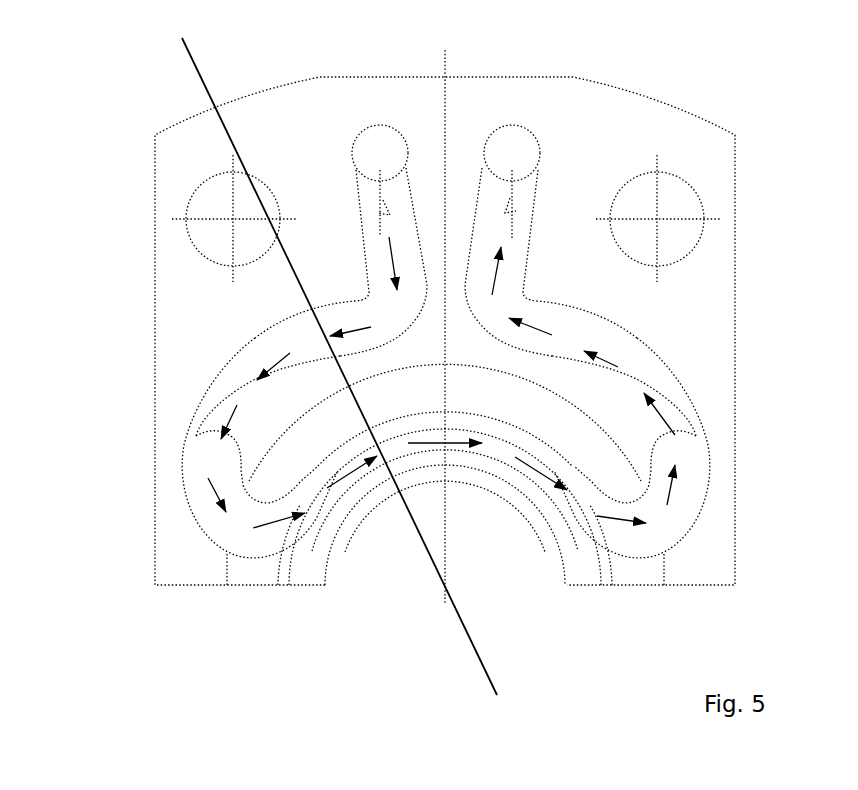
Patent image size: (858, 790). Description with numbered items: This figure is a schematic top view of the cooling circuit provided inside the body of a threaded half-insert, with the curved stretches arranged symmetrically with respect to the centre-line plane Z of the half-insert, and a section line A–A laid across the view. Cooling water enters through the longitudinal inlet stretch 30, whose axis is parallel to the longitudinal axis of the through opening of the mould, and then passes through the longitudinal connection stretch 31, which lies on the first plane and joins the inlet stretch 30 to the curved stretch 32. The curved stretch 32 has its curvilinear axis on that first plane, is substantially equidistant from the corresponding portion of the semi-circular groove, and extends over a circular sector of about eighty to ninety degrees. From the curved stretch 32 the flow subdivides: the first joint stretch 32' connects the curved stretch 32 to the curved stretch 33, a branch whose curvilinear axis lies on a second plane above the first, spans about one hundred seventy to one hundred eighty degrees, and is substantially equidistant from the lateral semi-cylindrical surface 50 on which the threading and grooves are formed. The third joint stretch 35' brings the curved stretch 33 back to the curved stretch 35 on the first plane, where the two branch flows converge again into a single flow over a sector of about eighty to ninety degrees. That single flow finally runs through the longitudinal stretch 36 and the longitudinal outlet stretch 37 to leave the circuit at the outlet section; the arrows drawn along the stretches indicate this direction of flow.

The longitudinal inlet stretch 30 is at (395, 165).
The longitudinal connection stretch 31 is at (378, 247).
The curved stretch 32 is at (195, 431).
The first joint stretch 32' is at (170, 479).
The curved stretch 33 is at (308, 487).
The curved stretch 35 is at (689, 452).
The third joint stretch 35' is at (703, 516).
The longitudinal stretch 36 is at (513, 253).
The longitudinal outlet stretch 37 is at (526, 162).
The lateral semi-cylindrical surface 50 is at (370, 507).
The section line A- A is at (181, 56).
The centre-line plane Z is at (445, 57).